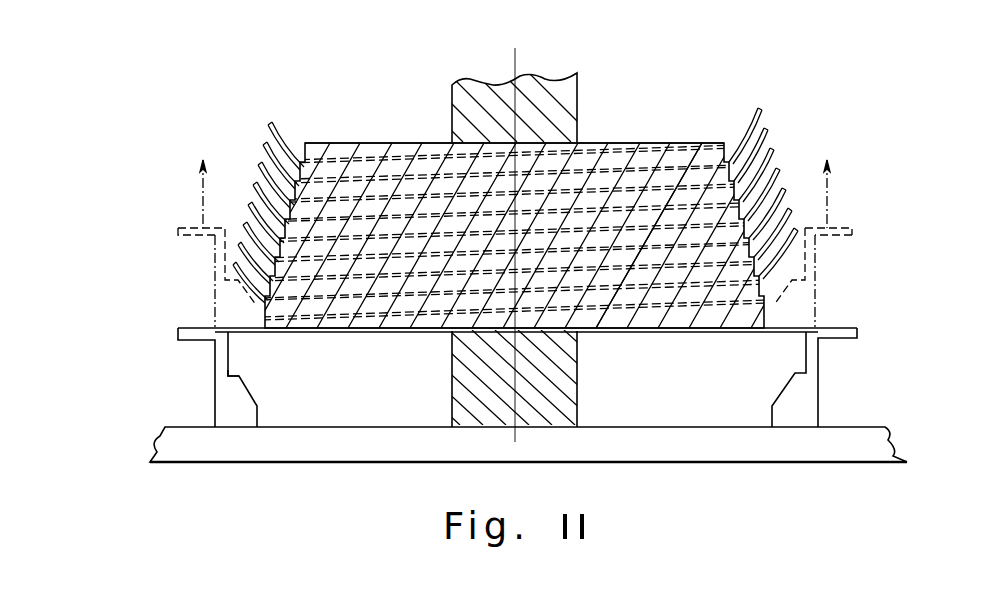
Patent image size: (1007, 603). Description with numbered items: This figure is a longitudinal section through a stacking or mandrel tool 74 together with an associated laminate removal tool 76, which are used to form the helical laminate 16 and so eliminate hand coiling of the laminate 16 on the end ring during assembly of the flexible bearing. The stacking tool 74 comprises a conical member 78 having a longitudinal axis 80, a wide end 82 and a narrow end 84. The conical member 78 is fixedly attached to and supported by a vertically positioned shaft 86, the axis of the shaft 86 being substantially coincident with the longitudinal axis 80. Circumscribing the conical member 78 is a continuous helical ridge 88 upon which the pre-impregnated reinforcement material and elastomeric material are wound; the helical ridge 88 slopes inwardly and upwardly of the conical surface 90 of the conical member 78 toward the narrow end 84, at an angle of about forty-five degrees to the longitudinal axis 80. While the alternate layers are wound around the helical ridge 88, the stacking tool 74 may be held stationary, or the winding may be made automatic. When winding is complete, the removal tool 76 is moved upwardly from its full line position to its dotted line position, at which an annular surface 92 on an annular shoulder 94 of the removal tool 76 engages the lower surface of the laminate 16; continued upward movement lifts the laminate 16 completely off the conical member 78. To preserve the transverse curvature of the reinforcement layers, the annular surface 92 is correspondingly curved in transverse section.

The helical laminate 16 is at (784, 160).
The stacking tool 74 is at (290, 88).
The laminate removal tool 76 is at (165, 352).
The conical member 78 is at (381, 148).
The longitudinal axis 80 is at (515, 58).
The wide end 82 is at (368, 329).
The narrow end 84 is at (627, 145).
The shaft 86 is at (579, 360).
The helical ridge 88 is at (421, 295).
The conical surface 90 is at (292, 186).
The annular surface 92 is at (253, 394).
The annular shoulder 94 is at (232, 376).